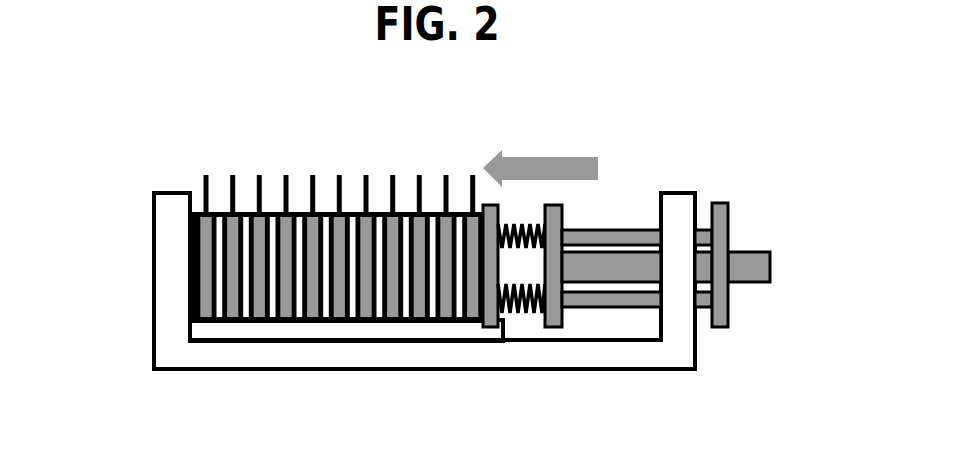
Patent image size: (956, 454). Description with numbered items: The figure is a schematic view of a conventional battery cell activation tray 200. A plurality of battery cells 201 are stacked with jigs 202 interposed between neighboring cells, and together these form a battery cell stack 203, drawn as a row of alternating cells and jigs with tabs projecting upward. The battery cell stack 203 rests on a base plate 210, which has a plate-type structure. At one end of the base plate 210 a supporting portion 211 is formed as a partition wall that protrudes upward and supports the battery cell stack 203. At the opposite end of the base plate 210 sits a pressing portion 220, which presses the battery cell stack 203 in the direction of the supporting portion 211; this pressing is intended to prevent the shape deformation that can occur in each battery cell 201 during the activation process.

The battery module assembly 200 is at (173, 152).
The battery cell 201 is at (234, 318).
The jig 202 is at (353, 300).
The battery cell stack 203 is at (193, 163).
The base plate 210 is at (507, 372).
The supporting portion 211 is at (155, 283).
The pressing portion 220 is at (727, 205).